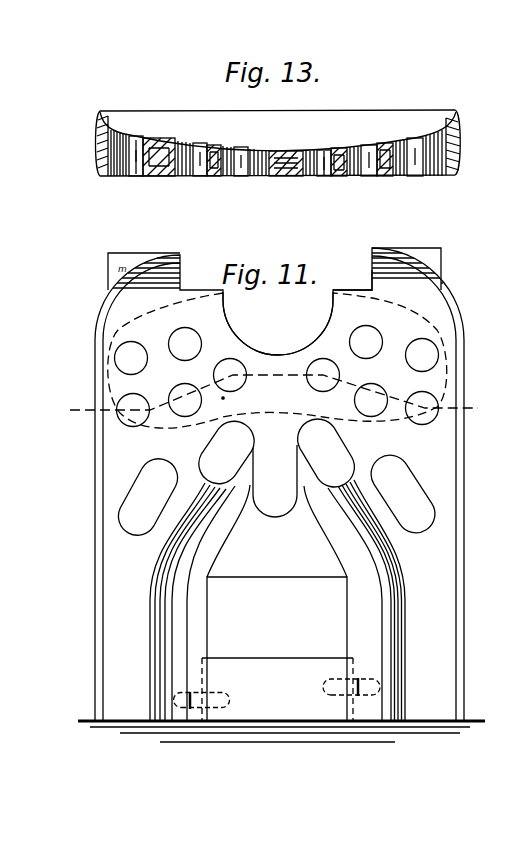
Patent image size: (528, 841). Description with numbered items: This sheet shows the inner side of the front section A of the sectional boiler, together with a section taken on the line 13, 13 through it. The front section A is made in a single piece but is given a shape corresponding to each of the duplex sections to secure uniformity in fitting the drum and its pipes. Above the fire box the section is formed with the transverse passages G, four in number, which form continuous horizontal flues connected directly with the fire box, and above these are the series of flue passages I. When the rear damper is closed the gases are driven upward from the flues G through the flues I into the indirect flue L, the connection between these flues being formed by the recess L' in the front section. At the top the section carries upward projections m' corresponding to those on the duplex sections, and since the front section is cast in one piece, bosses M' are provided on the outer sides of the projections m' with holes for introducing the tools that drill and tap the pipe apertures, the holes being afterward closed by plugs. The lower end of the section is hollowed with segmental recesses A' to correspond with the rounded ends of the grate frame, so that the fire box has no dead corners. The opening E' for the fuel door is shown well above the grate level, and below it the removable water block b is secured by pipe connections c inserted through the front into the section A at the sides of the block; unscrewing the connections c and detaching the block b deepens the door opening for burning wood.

In FIG. 13, the front section A is at (291, 143).
In FIG. 13, the flue passages I is at (325, 167).
In FIG. 11, the flue passages I is at (185, 344).
In FIG. 11, the bosses M' is at (407, 257).
In FIG. 11, the upward projections m' is at (352, 278).
In FIG. 11, the indirect flue L is at (278, 323).
In FIG. 11, the recess L' is at (277, 360).
In FIG. 11, the section line 13 13 is at (270, 398).
In FIG. 11, the transverse passages G is at (276, 477).
In FIG. 11, the segmental recesses A' is at (277, 600).
In FIG. 11, the opening for fuel door E' is at (277, 648).
In FIG. 11, the removable water block b is at (274, 666).
In FIG. 11, the pipe connections c is at (361, 679).